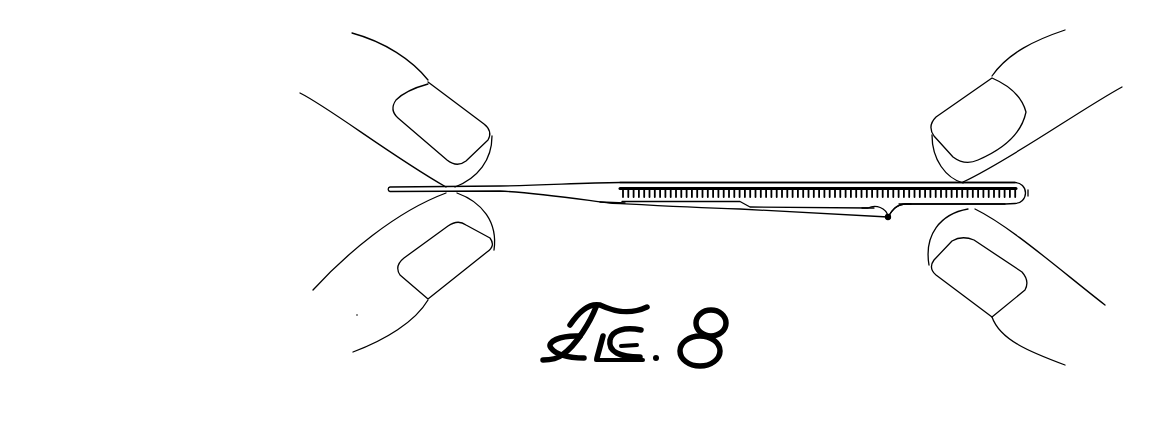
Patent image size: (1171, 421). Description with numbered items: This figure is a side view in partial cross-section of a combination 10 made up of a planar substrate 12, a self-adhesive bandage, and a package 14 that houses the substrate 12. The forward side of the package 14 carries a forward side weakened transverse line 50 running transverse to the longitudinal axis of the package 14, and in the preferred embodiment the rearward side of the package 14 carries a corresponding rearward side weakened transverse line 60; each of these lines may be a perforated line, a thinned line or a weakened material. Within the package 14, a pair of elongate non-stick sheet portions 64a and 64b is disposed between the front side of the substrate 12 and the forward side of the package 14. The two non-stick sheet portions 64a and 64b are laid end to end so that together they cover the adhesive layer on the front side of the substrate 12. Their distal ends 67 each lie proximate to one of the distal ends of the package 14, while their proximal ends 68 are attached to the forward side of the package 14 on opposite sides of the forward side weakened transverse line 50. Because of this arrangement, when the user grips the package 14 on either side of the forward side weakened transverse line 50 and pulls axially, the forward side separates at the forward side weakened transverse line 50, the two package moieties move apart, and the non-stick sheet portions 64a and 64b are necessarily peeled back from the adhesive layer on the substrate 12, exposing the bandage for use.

The combination 10 is at (830, 109).
The planar substrate 12 is at (732, 186).
The package 14 is at (600, 179).
The forward side weakened transverse line 50 is at (887, 219).
The rearward side weakened transverse line 60 is at (888, 182).
The non-stick sheet portion 64a is at (829, 208).
The non-stick sheet portion 64b is at (1006, 204).
The distal ends 67 is at (612, 202).
The proximal ends 68 is at (871, 209).